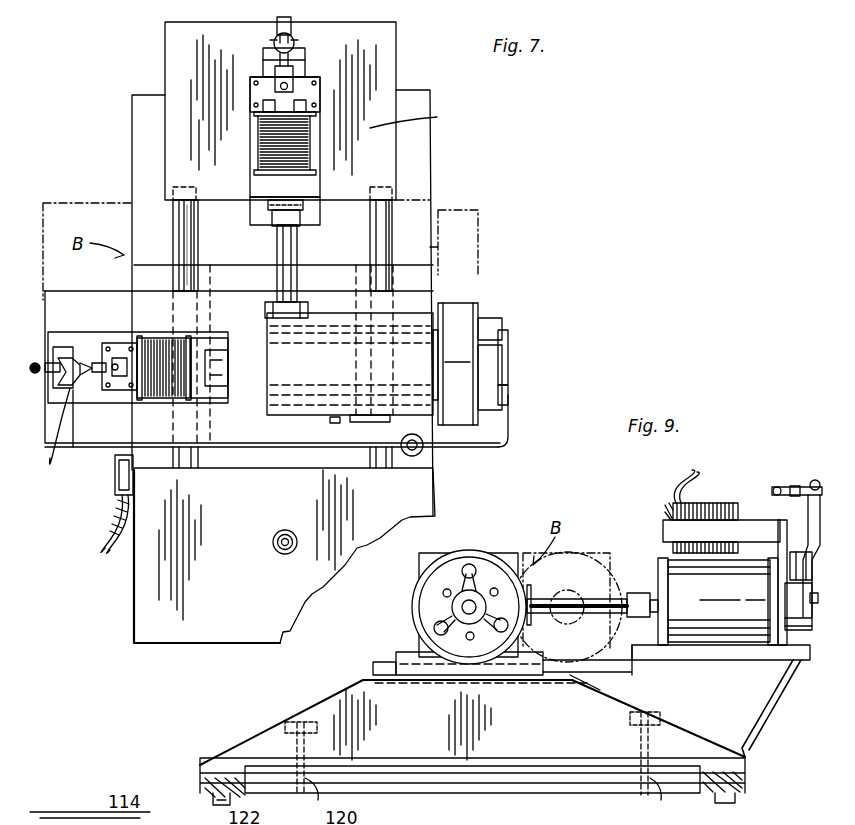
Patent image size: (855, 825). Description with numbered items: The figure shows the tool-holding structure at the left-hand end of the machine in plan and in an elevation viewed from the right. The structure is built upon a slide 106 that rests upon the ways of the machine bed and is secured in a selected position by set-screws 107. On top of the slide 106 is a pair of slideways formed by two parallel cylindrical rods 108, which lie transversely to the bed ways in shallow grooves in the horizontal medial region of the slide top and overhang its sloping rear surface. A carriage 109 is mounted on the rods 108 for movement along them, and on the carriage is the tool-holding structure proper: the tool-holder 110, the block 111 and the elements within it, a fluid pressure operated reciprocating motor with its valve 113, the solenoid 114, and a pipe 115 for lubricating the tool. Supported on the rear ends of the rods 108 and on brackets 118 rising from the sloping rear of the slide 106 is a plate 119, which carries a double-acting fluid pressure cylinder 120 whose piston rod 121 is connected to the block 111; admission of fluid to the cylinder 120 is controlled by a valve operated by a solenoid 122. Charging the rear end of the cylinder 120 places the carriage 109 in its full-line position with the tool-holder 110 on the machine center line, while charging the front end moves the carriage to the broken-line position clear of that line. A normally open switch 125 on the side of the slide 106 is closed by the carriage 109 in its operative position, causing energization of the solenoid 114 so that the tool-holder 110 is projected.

In FIG. 7, the slide 106 is at (150, 594).
In FIG. 9, the slide 106 is at (258, 745).
In FIG. 7, the set-screws 107 is at (292, 553).
In FIG. 9, the set-screws 107 is at (318, 790).
In FIG. 7, the cylindrical rods 108 is at (173, 223).
In FIG. 9, the cylindrical rods 108 is at (585, 656).
In FIG. 7, the carriage 109 is at (76, 306).
In FIG. 9, the carriage 109 is at (397, 650).
In FIG. 7, the tool-holder 110 is at (465, 313).
In FIG. 9, the tool-holder 110 is at (480, 552).
In FIG. 7, the block 111 is at (288, 420).
In FIG. 9, the block 111 is at (420, 565).
In FIG. 7, the valve 113 is at (50, 455).
In FIG. 7, the solenoid 114 is at (150, 348).
In FIG. 7, the pipe 115 is at (449, 448).
In FIG. 9, the brackets 118 is at (752, 716).
In FIG. 7, the plate 119 is at (165, 72).
In FIG. 9, the plate 119 is at (678, 661).
In FIG. 7, the cylinder 120 is at (419, 120).
In FIG. 9, the cylinder 120 is at (722, 630).
In FIG. 7, the piston rod 121 is at (294, 43).
In FIG. 9, the piston rod 121 is at (800, 632).
In FIG. 7, the solenoid 122 is at (268, 135).
In FIG. 9, the solenoid 122 is at (718, 503).
In FIG. 7, the electrical switch 125 is at (117, 480).